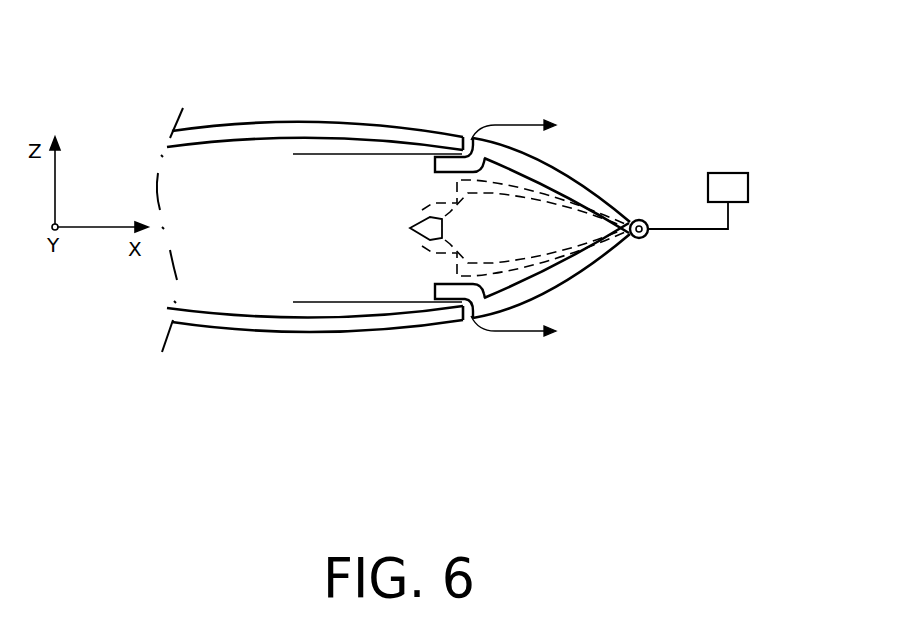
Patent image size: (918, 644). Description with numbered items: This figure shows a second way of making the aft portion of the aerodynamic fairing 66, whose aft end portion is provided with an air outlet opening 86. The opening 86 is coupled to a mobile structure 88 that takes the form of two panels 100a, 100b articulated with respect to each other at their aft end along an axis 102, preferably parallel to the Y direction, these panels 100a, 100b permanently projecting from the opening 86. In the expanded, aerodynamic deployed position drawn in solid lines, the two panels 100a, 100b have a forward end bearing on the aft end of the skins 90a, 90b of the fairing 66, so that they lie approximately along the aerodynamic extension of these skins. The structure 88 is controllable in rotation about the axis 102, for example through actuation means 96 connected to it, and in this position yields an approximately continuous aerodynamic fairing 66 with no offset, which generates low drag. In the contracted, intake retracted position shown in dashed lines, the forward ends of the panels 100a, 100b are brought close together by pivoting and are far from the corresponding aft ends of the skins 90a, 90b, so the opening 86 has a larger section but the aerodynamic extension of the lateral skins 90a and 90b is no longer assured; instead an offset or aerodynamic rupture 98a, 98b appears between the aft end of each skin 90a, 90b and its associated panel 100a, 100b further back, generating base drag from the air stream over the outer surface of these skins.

The aerodynamic fairing 66 is at (246, 122).
The skin 90a is at (350, 125).
The skin 90b is at (302, 333).
The offset or aerodynamic rupture 98a is at (472, 138).
The offset or aerodynamic rupture 98b is at (467, 318).
The panel 100a is at (534, 146).
The panel 100b is at (538, 305).
The mobile structure 88 is at (550, 146).
The actuation means 96 is at (732, 172).
The axis 102 is at (648, 236).
The air outlet opening 86 is at (580, 223).